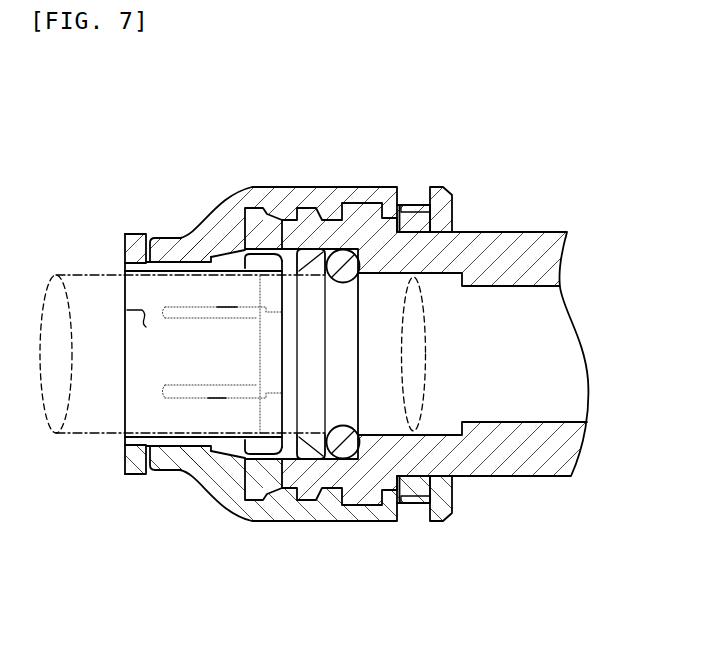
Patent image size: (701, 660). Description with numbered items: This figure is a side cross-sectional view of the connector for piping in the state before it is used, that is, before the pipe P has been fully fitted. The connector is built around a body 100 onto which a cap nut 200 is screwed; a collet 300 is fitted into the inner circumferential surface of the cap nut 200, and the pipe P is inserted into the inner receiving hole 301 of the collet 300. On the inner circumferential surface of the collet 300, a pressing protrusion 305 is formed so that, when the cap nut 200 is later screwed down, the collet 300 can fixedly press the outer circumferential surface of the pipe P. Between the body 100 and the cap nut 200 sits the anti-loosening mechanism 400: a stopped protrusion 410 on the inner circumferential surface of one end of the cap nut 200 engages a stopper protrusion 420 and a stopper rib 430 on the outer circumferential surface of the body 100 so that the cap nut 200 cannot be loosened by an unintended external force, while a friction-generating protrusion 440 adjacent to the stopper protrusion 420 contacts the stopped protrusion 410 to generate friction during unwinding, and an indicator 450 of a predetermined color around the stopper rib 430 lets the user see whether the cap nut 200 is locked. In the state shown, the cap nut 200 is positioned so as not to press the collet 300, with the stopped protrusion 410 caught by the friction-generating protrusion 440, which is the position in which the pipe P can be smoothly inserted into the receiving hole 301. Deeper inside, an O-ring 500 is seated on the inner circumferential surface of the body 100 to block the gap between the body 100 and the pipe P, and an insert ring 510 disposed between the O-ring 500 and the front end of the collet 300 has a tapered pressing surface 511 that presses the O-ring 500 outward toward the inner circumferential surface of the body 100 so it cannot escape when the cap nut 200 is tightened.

The body 100 is at (552, 238).
The cap nut 200 is at (232, 188).
The collet 300 is at (125, 244).
The inner receiving hole 301 is at (59, 275).
The pressing protrusion 305 is at (258, 276).
The anti-loosening mechanism 400 is at (405, 305).
The stopped protrusion 410 is at (452, 223).
The stopper protrusion 420 is at (404, 206).
The stopper rib 430 is at (437, 204).
The friction-generating protrusion 440 is at (397, 206).
The indicator 450 is at (432, 210).
The O-ring 500 is at (353, 500).
The insert ring 510 is at (310, 449).
The pressing surface 511 is at (340, 458).
The pipe P is at (88, 433).